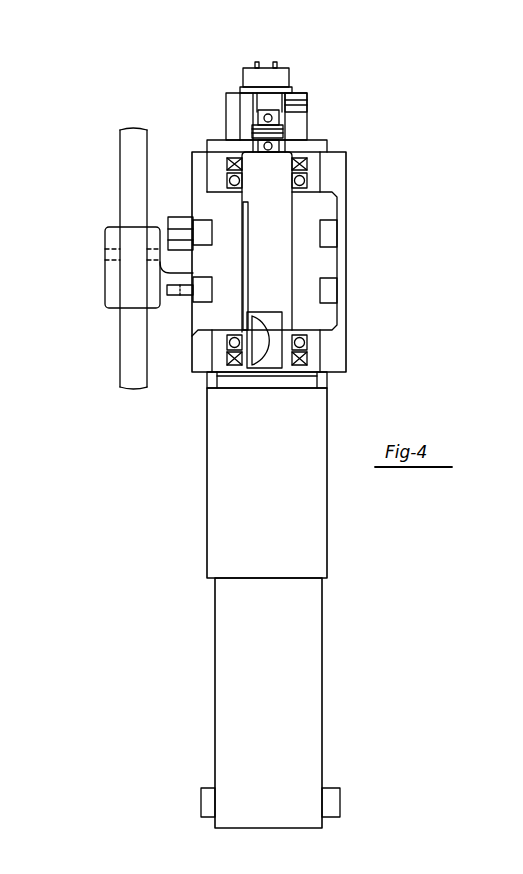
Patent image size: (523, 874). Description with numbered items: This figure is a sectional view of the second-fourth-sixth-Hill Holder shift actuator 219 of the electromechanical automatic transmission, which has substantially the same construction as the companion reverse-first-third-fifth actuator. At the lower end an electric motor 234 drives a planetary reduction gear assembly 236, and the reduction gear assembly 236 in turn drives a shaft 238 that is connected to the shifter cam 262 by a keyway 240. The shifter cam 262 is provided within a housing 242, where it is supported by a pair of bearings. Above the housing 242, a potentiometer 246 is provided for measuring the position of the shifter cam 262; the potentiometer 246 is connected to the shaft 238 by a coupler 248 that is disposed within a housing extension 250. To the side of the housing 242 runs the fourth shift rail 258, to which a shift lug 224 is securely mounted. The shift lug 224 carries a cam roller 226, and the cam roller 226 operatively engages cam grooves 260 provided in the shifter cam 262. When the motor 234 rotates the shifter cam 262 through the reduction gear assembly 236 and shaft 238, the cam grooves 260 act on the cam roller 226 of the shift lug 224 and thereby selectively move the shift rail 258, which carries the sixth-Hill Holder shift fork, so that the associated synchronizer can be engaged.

The shift actuator 219 is at (348, 134).
The shift lug 224 is at (105, 290).
The cam roller 226 is at (202, 232).
The electric motor 234 is at (280, 720).
The planetary reduction gear assembly 236 is at (262, 533).
The shaft 238 is at (270, 278).
The keyway 240 is at (246, 240).
The housing 242 is at (334, 170).
The potentiometer 246 is at (282, 78).
The coupler 248 is at (292, 110).
The housing extension 250 is at (236, 108).
The fourth shift rail 258 is at (132, 165).
The cam grooves 260 is at (325, 234).
The shifter cam 262 is at (322, 318).